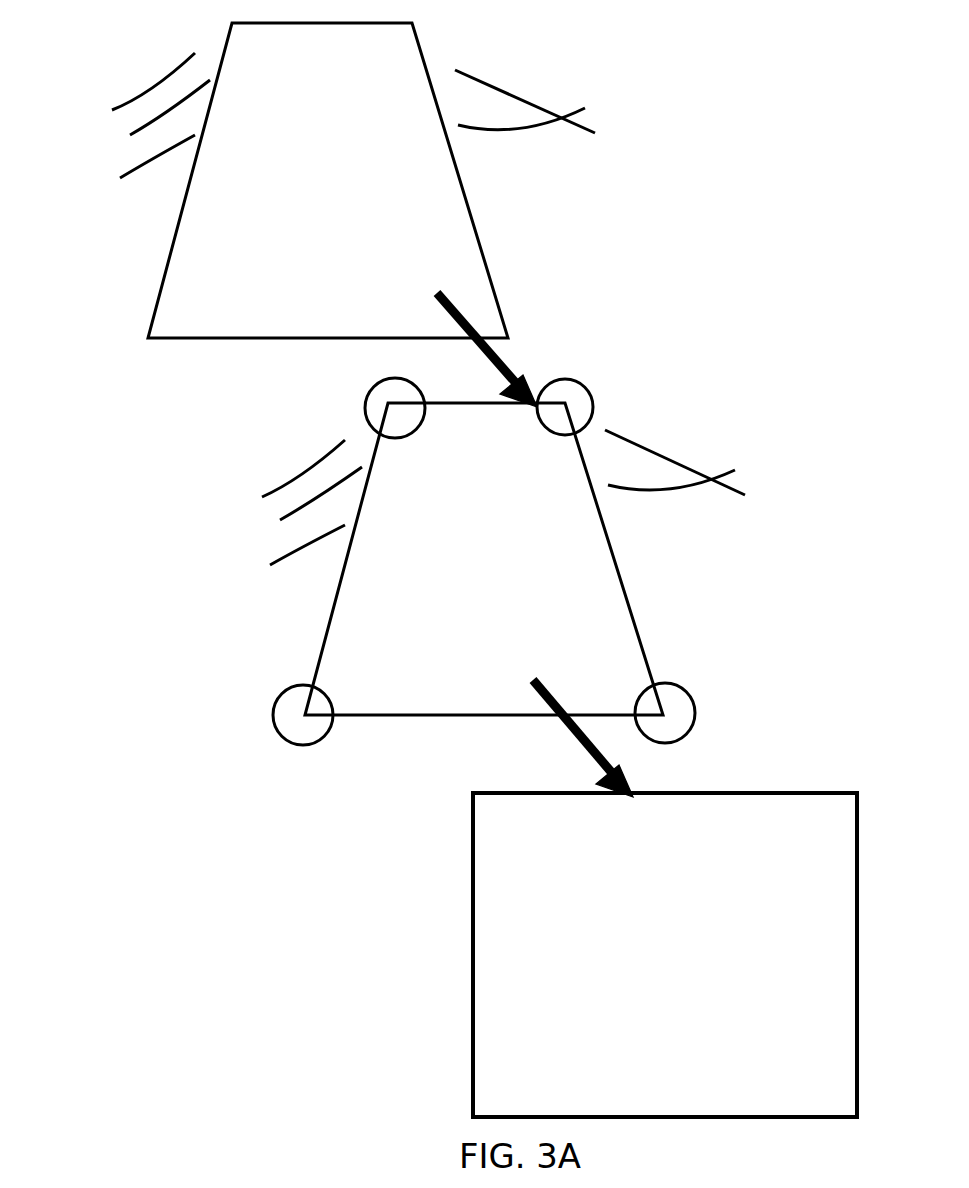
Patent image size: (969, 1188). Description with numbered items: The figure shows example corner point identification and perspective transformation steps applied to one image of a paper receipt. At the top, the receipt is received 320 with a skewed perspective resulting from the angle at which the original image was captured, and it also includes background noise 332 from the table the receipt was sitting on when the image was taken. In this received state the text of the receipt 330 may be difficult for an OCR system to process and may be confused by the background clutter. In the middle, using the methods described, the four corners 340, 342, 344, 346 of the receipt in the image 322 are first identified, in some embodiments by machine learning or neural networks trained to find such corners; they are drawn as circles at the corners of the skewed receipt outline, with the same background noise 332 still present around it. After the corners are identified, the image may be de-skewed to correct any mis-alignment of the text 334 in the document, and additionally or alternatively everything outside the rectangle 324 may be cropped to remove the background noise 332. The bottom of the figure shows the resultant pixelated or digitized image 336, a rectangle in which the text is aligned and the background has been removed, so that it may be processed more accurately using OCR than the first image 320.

The received receipt image 320 is at (117, 5).
The receipt image with identified corners 322 is at (263, 390).
The rectangle 324 is at (472, 783).
The receipt text 330 is at (305, 157).
The background noise 332 is at (118, 105).
The de-skewed text 334 is at (672, 942).
The resultant digitized image 336 is at (843, 983).
The first corner 340 is at (372, 388).
The second corner 342 is at (590, 380).
The third corner 344 is at (665, 688).
The fourth corner 346 is at (320, 700).